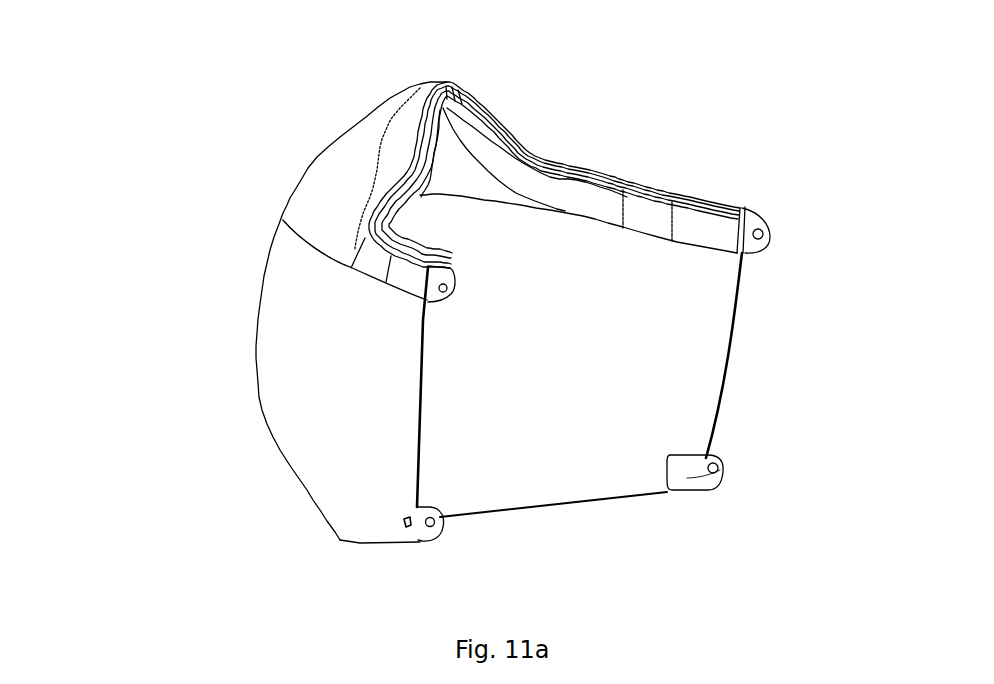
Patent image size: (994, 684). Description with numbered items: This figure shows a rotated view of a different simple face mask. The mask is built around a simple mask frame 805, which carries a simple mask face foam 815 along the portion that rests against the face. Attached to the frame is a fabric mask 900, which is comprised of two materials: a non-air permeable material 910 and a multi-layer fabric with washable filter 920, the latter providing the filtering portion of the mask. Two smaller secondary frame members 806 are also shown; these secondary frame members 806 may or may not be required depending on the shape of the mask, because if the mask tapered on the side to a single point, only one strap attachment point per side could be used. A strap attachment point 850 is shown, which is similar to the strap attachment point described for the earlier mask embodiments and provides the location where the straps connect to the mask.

The fabric mask 900 is at (295, 267).
The non-air permeable material 910 is at (373, 125).
The multi-layer fabric with washable filter 920 is at (357, 387).
The simple mask frame 805 is at (473, 91).
The simple mask face foam 815 is at (577, 192).
The strap attachment point 850 is at (763, 243).
The secondary frame member 806 is at (443, 530).